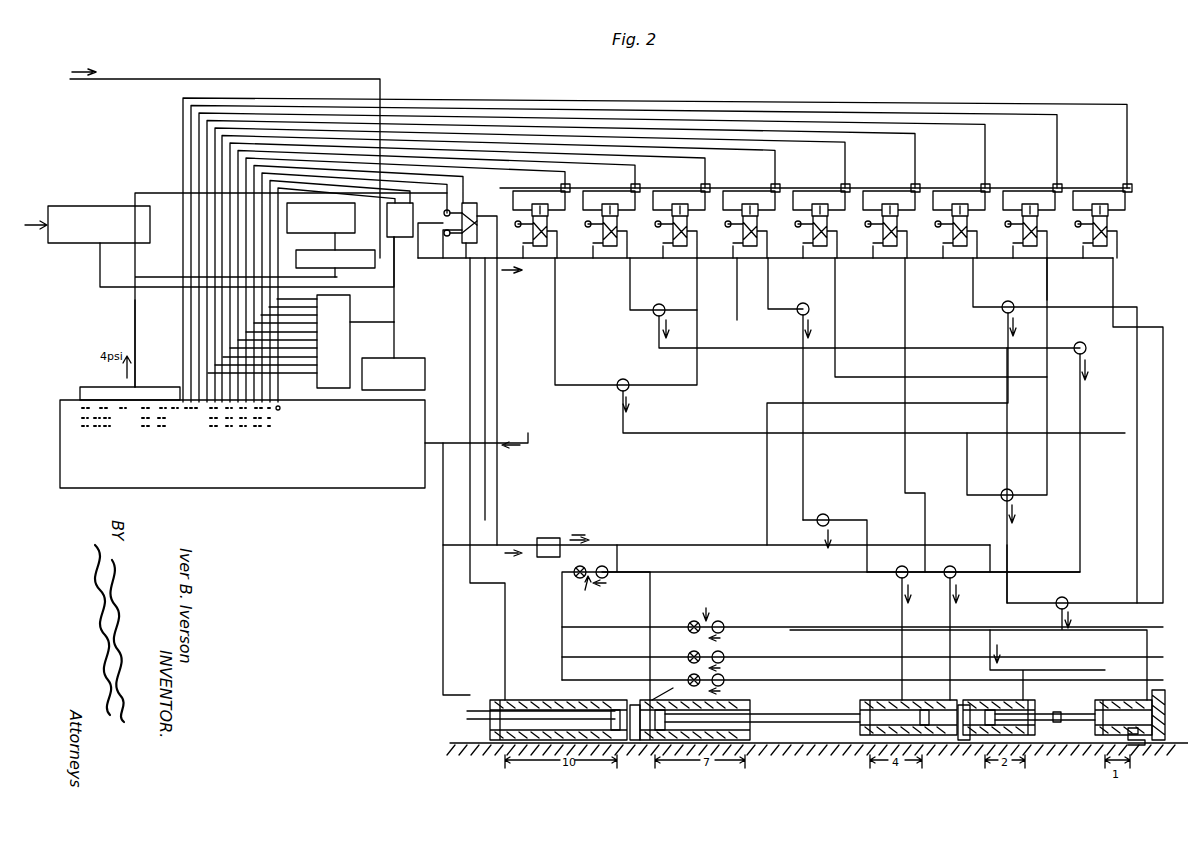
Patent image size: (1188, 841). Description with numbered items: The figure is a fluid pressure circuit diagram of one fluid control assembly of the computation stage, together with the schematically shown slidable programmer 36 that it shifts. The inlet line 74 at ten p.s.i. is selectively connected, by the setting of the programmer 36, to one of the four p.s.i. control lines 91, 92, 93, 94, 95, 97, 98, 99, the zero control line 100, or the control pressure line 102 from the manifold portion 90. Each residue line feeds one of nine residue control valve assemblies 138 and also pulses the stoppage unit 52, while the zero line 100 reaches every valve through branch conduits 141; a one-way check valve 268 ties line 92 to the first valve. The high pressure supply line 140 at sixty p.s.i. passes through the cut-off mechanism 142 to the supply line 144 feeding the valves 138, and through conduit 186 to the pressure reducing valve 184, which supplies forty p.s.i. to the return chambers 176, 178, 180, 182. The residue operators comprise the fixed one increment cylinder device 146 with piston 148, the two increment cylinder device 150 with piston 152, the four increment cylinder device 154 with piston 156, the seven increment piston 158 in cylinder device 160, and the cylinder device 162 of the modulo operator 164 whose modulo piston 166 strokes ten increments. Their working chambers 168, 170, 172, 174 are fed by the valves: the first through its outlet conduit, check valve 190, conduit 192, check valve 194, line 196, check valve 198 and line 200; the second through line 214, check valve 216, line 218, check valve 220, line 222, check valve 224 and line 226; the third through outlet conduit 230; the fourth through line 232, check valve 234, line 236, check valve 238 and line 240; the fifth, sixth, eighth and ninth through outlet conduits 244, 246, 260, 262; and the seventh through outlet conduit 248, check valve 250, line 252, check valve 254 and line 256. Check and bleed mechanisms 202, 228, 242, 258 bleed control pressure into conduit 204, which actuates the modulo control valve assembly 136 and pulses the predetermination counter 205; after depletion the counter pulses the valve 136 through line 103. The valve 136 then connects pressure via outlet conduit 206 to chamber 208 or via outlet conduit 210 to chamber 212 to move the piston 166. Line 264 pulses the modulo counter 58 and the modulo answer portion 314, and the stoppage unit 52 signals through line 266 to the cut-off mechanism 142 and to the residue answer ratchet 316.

The computer programmer 36 is at (357, 497).
The stoppage unit 52 is at (334, 390).
The modulo counter 58 is at (376, 264).
The fluid pressure inlet line 74 is at (520, 440).
The manifold portion 90 is at (98, 390).
The fluid connecting line 91 is at (312, 175).
The fluid connecting line 92 is at (292, 167).
The fluid connecting line 93 is at (265, 158).
The fluid connecting line 94 is at (233, 162).
The fluid connecting line 95 is at (223, 180).
The fluid connecting line 97 is at (207, 252).
The fluid connecting line 98 is at (197, 270).
The fluid connecting line 99 is at (187, 312).
The zero control line 100 is at (342, 188).
The control pressure line 102 is at (133, 328).
The line 103 is at (155, 185).
The modulo operator control valve assembly 136 is at (478, 216).
The residue operator control valve assembly 138 is at (744, 198).
The high pressure supply line 140 is at (203, 78).
The branch conduit 141 is at (658, 196).
The cut-off mechanism 142 is at (404, 200).
The supply line 144 is at (581, 262).
The one increment cylinder device 146 is at (1120, 698).
The one increment piston 148 is at (1140, 740).
The two increment cylinder device 150 is at (985, 708).
The two increment piston 152 is at (975, 738).
The four increment cylinder device 154 is at (885, 698).
The four increment piston 156 is at (923, 708).
The seven increment piston 158 is at (675, 738).
The cylinder device 160 is at (735, 735).
The cylinder device 162 is at (537, 670).
The modulo operator device 164 is at (530, 745).
The modulo piston 166 is at (614, 708).
The working chamber 168 is at (1140, 742).
The working chamber 170 is at (990, 725).
The working chamber 172 is at (946, 740).
The working chamber 174 is at (641, 742).
The return chamber 176 is at (1100, 730).
The return chamber 178 is at (1033, 706).
The return chamber 180 is at (880, 735).
The return chamber 182 is at (750, 725).
The pressure reducing valve mechanism 184 is at (545, 558).
The conduit 186 is at (440, 515).
The one-way check valve mechanism 190 is at (620, 378).
The conduit 192 is at (707, 435).
The check valve 194 is at (1012, 487).
The line 196 is at (1010, 590).
The check valve 198 is at (1075, 598).
The line 200 is at (1138, 630).
The check and bleed valve mechanism 202 is at (862, 641).
The conduit 204 is at (468, 596).
The predetermination counter 205 is at (80, 204).
The outlet conduit 206 is at (497, 364).
The chamber 208 is at (660, 690).
The outlet conduit 210 is at (489, 393).
The chamber 212 is at (500, 722).
The line 214 is at (633, 274).
The check valve 216 is at (663, 303).
The line 218 is at (732, 346).
The check valve 220 is at (1074, 342).
The line 222 is at (1083, 434).
The check valve 224 is at (958, 565).
The line 226 is at (948, 652).
The check and bleed mechanism 228 is at (760, 652).
The outlet conduit 230 is at (703, 268).
The line 232 is at (781, 280).
The check valve 234 is at (810, 305).
The line 236 is at (807, 482).
The check valve 238 is at (895, 575).
The line 240 is at (900, 610).
The check and bleed mechanism 242 is at (758, 680).
The outlet conduit 244 is at (840, 333).
The outlet conduit 246 is at (907, 332).
The outlet conduit 248 is at (972, 276).
The check valve 250 is at (1003, 313).
The line 252 is at (972, 403).
The check valve 254 is at (835, 512).
The line 256 is at (650, 580).
The check and bleed valve mechanism 258 is at (606, 612).
The outlet conduit 260 is at (1050, 282).
The outlet conduit 262 is at (1120, 283).
The line 264 is at (147, 297).
The line 266 is at (365, 320).
The one-way check valve mechanism 268 is at (790, 183).
The modulo answer portion 314 is at (320, 227).
The ratchet mechanism 316 is at (396, 392).